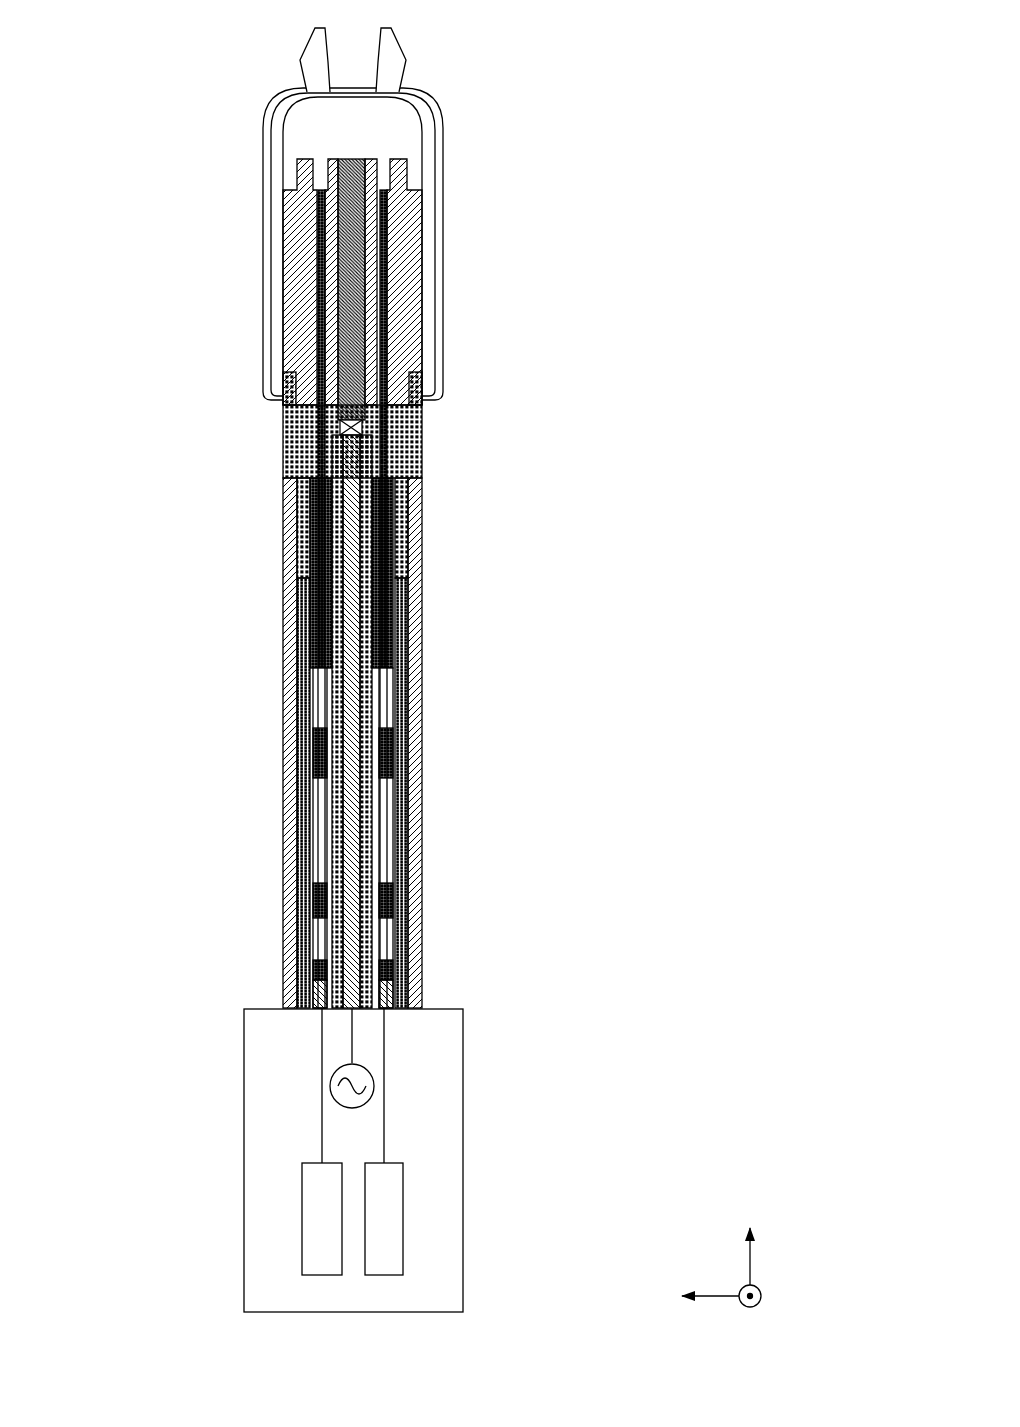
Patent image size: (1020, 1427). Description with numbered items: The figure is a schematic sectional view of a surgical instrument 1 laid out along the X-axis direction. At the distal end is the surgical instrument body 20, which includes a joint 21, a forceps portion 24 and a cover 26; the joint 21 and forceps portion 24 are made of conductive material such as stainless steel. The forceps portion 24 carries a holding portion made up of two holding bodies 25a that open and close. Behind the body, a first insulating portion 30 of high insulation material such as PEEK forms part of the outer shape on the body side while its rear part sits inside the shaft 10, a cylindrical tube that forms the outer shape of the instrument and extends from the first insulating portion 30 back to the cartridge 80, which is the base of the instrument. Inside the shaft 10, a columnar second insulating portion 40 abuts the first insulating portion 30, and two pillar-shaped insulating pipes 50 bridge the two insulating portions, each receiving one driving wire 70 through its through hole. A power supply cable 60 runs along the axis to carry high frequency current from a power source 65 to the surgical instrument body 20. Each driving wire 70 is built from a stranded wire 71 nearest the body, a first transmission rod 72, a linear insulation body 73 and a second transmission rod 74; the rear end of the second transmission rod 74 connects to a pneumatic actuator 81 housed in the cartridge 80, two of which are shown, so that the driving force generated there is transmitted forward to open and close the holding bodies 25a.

The surgical instrument 1 is at (599, 80).
The shaft 10 is at (422, 705).
The surgical instrument body 20 is at (168, 170).
The joint 21 is at (443, 265).
The forceps portion 24 is at (418, 117).
The holding body 25a is at (304, 42).
The cover 26 is at (263, 260).
The first insulating portion 30 is at (222, 438).
The second insulating portion 40 is at (245, 705).
The insulating pipe 50 is at (250, 565).
The power supply cable 60 is at (362, 428).
The power source 65 is at (374, 1088).
The driving wire 70 is at (248, 862).
The stranded wire 71 is at (318, 338).
The first transmission rod 72 is at (313, 795).
The linear insulation body 73 is at (320, 938).
The second transmission rod 74 is at (320, 980).
The cartridge 80 is at (244, 1101).
The pneumatic actuator 81 is at (302, 1213).